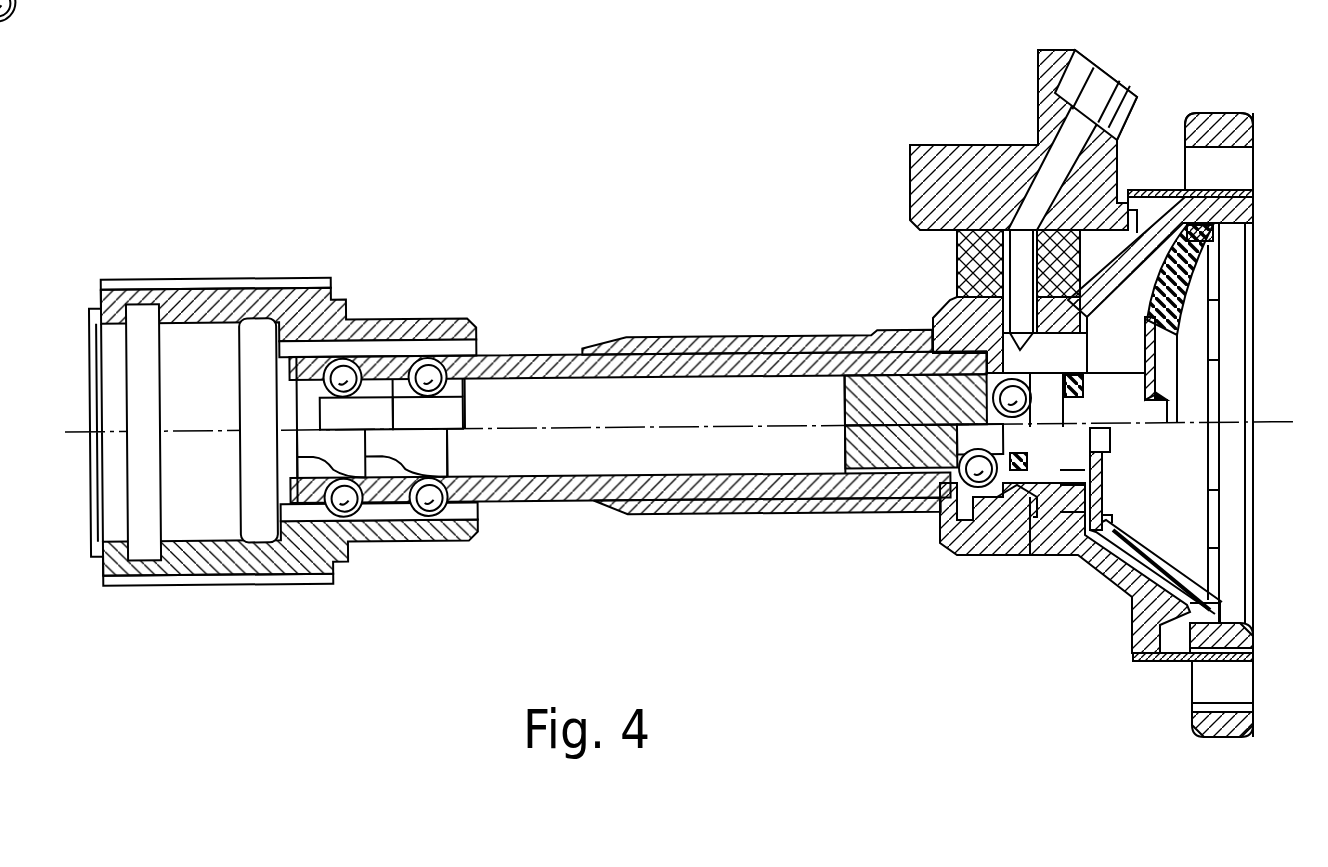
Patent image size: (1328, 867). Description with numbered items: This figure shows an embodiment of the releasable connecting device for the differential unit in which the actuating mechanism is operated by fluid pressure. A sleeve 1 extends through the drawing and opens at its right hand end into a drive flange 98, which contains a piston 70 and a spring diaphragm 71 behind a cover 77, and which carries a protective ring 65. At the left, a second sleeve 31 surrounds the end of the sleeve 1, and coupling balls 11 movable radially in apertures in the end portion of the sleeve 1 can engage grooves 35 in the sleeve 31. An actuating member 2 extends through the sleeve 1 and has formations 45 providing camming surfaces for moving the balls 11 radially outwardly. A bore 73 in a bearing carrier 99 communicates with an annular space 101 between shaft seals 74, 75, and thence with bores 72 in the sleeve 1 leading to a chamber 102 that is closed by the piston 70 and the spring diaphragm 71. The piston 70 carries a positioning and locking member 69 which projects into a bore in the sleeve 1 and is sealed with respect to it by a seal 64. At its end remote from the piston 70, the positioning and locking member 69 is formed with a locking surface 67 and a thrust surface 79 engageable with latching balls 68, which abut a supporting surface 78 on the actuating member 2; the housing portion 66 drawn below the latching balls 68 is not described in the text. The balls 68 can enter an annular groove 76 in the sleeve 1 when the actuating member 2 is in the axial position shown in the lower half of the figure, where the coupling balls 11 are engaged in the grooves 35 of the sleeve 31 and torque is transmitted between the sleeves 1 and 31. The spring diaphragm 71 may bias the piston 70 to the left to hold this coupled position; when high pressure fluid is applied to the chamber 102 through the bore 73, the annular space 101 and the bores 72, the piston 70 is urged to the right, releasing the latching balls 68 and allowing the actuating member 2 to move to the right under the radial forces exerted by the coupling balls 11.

The sleeve 1 is at (773, 360).
The actuating member 2 is at (553, 393).
The balls 11 is at (422, 368).
The sleeve 31 is at (232, 305).
The grooves 35 is at (310, 345).
The formations 45 is at (375, 388).
The seal 64 is at (1076, 393).
The protective ring 65 is at (1165, 188).
The lower housing 66 is at (1000, 556).
The locking surface 67 is at (1008, 446).
The latching balls 68 is at (975, 490).
The positioning and locking member 69 is at (1143, 423).
The piston 70 is at (1160, 333).
The spring diaphragm 71 is at (1218, 280).
The bores 72 is at (1010, 340).
The bore 73 is at (1037, 197).
The shaft seal 74 is at (985, 250).
The shaft seal 75 is at (1065, 240).
The annular groove 76 is at (947, 358).
The cover 77 is at (1208, 232).
The supporting surface 78 is at (878, 497).
The thrust surface 79 is at (945, 500).
The drive flange 98 is at (1240, 205).
The bearing carrier 99 is at (957, 178).
The annular space 101 is at (1087, 312).
The chamber 102 is at (1135, 198).